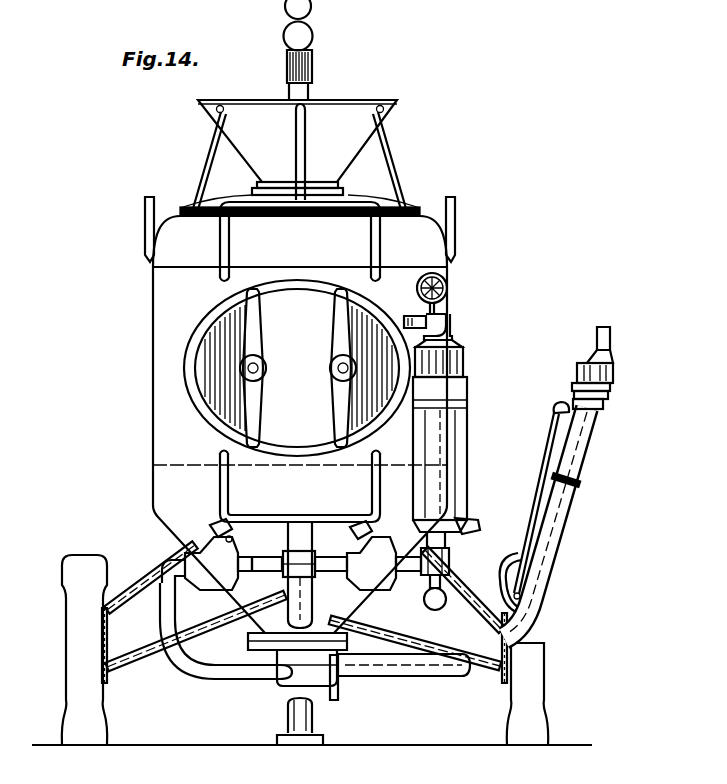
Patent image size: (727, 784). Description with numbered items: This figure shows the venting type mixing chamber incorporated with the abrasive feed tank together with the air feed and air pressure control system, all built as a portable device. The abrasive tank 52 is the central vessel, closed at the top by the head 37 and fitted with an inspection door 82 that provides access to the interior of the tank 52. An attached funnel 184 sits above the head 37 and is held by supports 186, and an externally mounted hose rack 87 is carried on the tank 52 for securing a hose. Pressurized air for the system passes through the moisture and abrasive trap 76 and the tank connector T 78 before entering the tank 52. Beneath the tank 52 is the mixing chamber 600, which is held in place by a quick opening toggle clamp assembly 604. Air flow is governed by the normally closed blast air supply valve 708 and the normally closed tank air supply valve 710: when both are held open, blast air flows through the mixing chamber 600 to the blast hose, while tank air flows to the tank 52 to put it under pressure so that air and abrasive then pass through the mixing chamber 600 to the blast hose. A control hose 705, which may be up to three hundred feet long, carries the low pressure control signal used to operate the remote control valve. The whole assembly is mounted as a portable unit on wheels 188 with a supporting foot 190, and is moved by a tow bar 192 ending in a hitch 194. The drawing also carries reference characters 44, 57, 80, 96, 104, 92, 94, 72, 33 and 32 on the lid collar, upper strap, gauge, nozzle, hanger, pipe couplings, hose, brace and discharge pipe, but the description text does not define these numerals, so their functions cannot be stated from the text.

The hitch 194 is at (306, 17).
The tow bar 192 is at (309, 97).
The funnel 184 is at (365, 110).
The supports 186 is at (212, 141).
The filler collar 44 is at (307, 182).
The head 37 is at (222, 197).
The upper bracket strap 57 is at (222, 238).
The pressure gauge 80 is at (445, 275).
The tank connector T 78 is at (437, 315).
The moisture and abrasive trap 76 is at (462, 351).
The spray nozzle 96 is at (610, 337).
The inspection door 82 is at (210, 371).
The wand hanger 104 is at (543, 461).
The abrasive tank 52 is at (175, 475).
The hose rack 87 is at (222, 500).
The blast air supply valve 708 is at (203, 555).
The pipe coupling 92 is at (232, 539).
The right valve 94 is at (352, 538).
The tank air supply valve 710 is at (447, 542).
The hose 72 is at (540, 553).
The control hose 705 is at (543, 556).
The frame brace 33 is at (362, 613).
The center discharge pipe 32 is at (248, 626).
The wheels 188 is at (80, 641).
The mixing chamber 600 is at (278, 678).
The supporting foot 190 is at (289, 713).
The quick opening toggle clamp assembly 604 is at (355, 680).